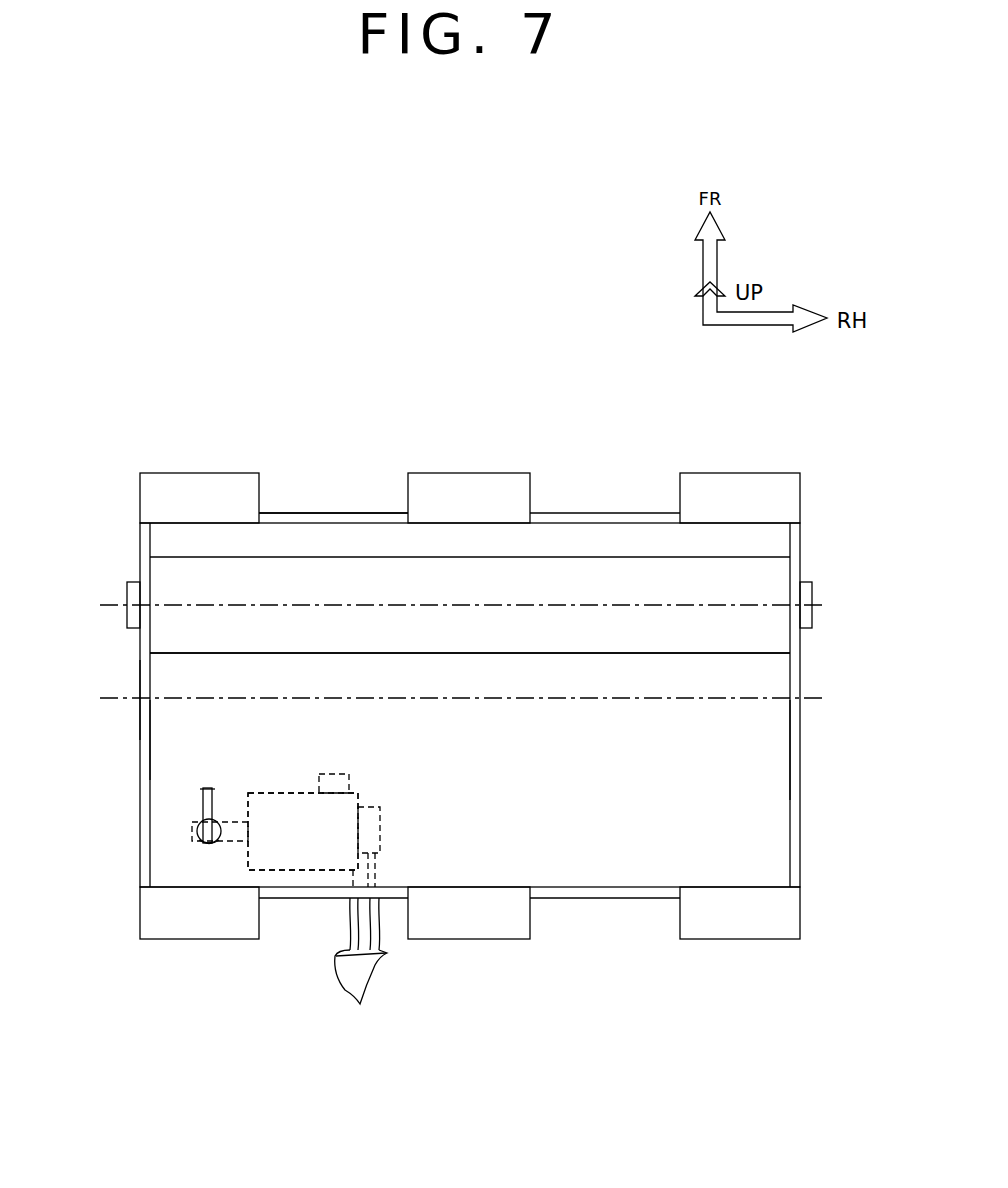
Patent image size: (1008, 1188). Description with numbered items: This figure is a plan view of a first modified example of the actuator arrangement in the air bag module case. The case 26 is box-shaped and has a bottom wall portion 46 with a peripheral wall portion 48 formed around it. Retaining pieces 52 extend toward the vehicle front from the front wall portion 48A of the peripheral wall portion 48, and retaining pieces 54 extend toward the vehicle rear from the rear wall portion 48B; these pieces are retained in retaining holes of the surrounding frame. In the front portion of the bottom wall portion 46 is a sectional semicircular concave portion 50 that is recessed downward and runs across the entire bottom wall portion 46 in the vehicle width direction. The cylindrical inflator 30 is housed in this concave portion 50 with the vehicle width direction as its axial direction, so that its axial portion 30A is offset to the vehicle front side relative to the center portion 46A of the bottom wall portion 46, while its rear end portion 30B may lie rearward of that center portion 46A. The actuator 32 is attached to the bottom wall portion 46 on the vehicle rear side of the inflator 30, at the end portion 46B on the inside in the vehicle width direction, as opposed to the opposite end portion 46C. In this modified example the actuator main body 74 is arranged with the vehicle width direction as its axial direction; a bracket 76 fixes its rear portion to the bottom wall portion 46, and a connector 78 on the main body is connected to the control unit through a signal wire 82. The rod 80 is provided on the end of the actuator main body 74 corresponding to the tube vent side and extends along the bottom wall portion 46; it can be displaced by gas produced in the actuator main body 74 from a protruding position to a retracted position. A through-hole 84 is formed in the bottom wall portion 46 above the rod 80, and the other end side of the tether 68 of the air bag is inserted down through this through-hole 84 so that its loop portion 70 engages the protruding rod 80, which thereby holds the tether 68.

The case 26 is at (375, 513).
The inflator 30 is at (577, 556).
The axial portion 30A is at (127, 604).
The rear end portion 30B is at (495, 655).
The actuator 32 is at (377, 798).
The bottom wall portion 46 is at (597, 865).
The center portion 46A is at (140, 698).
The end portion 46B is at (163, 738).
The end portion 46C is at (762, 760).
The peripheral wall portion 48 is at (647, 513).
The front wall portion 48A is at (292, 513).
The rear wall portion 48B is at (557, 898).
The concave portion 50 is at (377, 654).
The retaining pieces 52 is at (207, 473).
The retaining pieces 54 is at (198, 939).
The tether 68 is at (213, 795).
The loop portion 70 is at (202, 845).
The actuator main body 74 is at (303, 887).
The bracket 76 is at (333, 772).
The connector 78 is at (383, 833).
The rod 80 is at (232, 843).
The signal wire 82 is at (361, 969).
The through-hole 84 is at (203, 843).